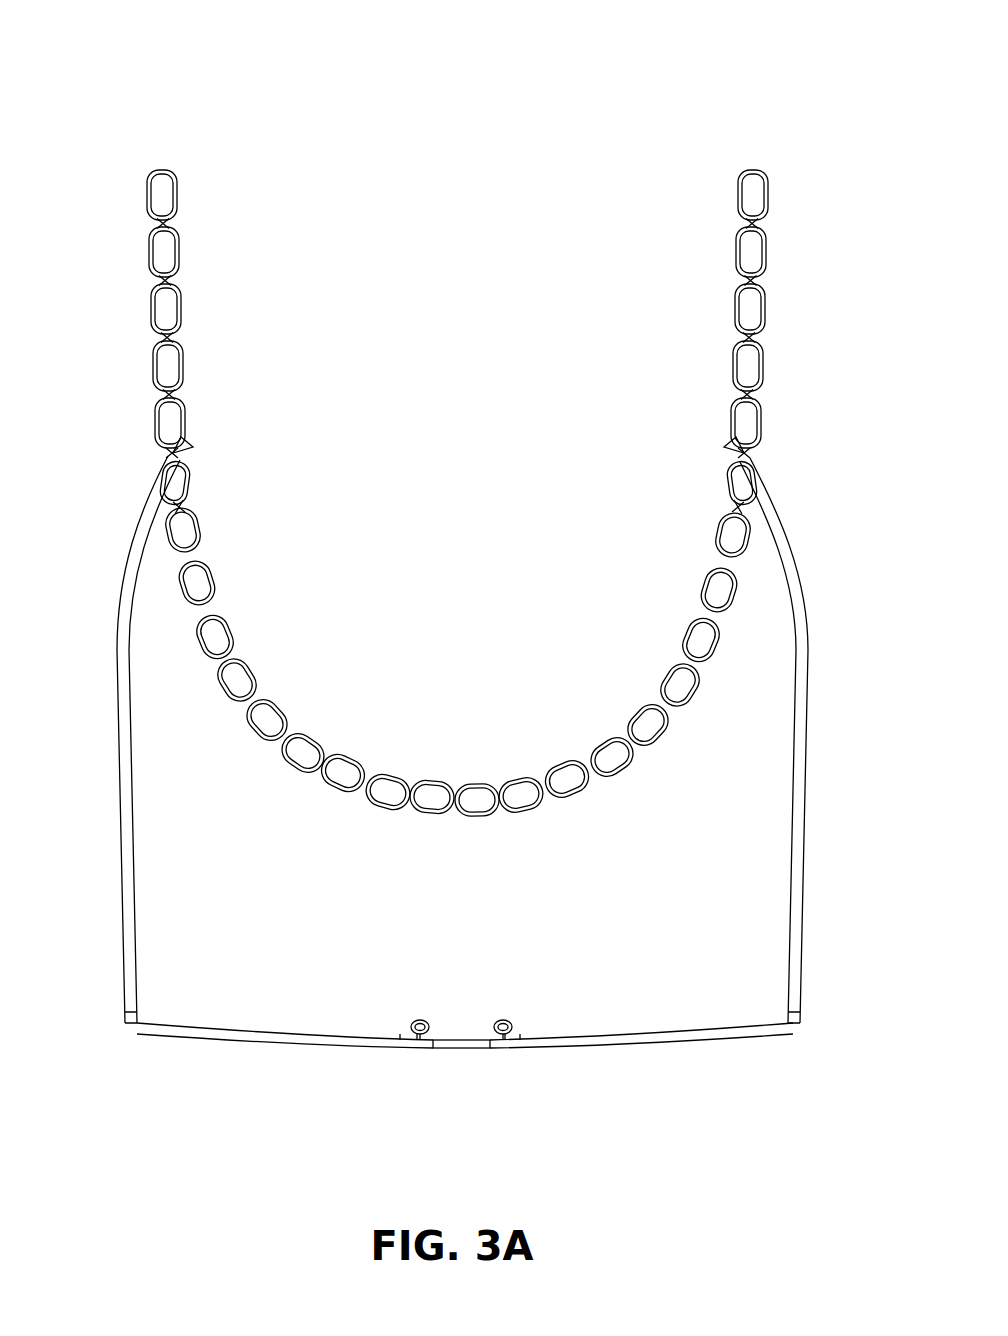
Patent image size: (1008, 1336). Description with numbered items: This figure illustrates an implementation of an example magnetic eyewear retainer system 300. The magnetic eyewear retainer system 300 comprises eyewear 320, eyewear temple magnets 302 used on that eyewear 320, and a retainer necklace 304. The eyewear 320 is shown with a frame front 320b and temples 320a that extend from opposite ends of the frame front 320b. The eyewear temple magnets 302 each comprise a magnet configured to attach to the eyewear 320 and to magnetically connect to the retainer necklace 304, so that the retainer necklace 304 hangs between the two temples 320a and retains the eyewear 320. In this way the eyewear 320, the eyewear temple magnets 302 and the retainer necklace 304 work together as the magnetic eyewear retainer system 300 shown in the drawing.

The magnetic eyewear retainer system 300 is at (547, 50).
The eyewear temple magnets 302 is at (217, 470).
The retainer necklace 304 is at (476, 726).
The eyewear 320 is at (480, 906).
The temples 320a is at (172, 812).
The frame front 320b is at (380, 976).